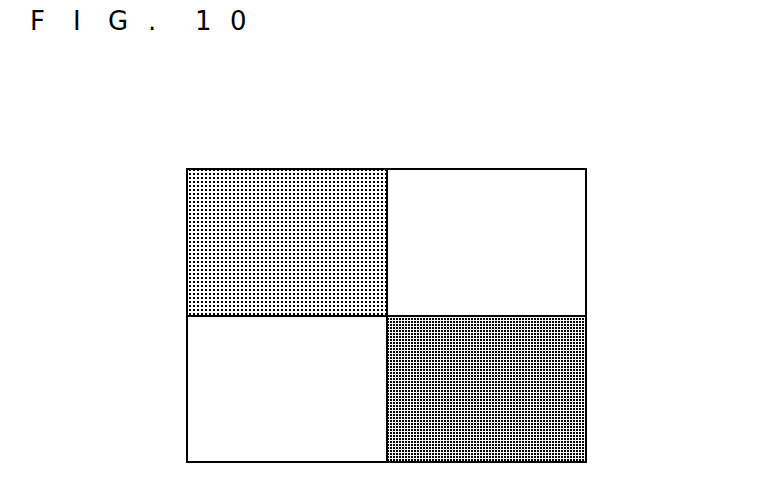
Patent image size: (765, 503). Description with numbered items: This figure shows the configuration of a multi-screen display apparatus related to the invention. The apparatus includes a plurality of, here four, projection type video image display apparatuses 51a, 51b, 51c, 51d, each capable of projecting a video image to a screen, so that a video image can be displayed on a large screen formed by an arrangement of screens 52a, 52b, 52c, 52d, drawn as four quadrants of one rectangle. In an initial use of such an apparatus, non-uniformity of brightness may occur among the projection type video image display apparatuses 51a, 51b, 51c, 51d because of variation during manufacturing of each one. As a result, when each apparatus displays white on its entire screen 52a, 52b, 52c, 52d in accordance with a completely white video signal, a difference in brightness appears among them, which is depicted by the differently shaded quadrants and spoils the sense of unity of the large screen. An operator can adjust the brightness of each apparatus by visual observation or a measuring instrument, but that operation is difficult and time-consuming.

The projection type video image display apparatus 51a is at (187, 241).
The projection type video image display apparatus 51b is at (586, 239).
The projection type video image display apparatus 51c is at (187, 386).
The projection type video image display apparatus 51d is at (586, 384).
The screen 52a is at (242, 242).
The screen 52b is at (530, 242).
The screen 52c is at (242, 389).
The screen 52d is at (530, 389).